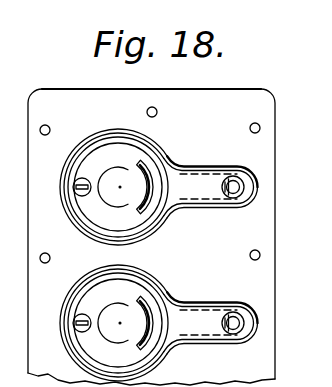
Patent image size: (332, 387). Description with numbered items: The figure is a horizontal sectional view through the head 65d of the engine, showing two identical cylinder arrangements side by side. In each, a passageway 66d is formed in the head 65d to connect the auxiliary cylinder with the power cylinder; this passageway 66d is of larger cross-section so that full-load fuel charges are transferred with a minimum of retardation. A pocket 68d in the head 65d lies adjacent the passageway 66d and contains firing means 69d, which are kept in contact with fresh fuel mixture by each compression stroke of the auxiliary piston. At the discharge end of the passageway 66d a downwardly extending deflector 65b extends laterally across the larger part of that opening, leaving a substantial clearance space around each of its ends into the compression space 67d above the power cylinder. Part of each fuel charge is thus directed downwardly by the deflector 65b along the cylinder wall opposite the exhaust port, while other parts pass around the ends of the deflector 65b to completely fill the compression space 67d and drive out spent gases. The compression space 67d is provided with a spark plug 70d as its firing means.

The head 65d is at (204, 90).
The deflector 65b is at (157, 178).
The passageway 66d is at (201, 171).
The compression space 67d is at (102, 143).
The pocket 68d is at (232, 177).
The firing means 69d is at (240, 195).
The spark plug 70d is at (80, 197).